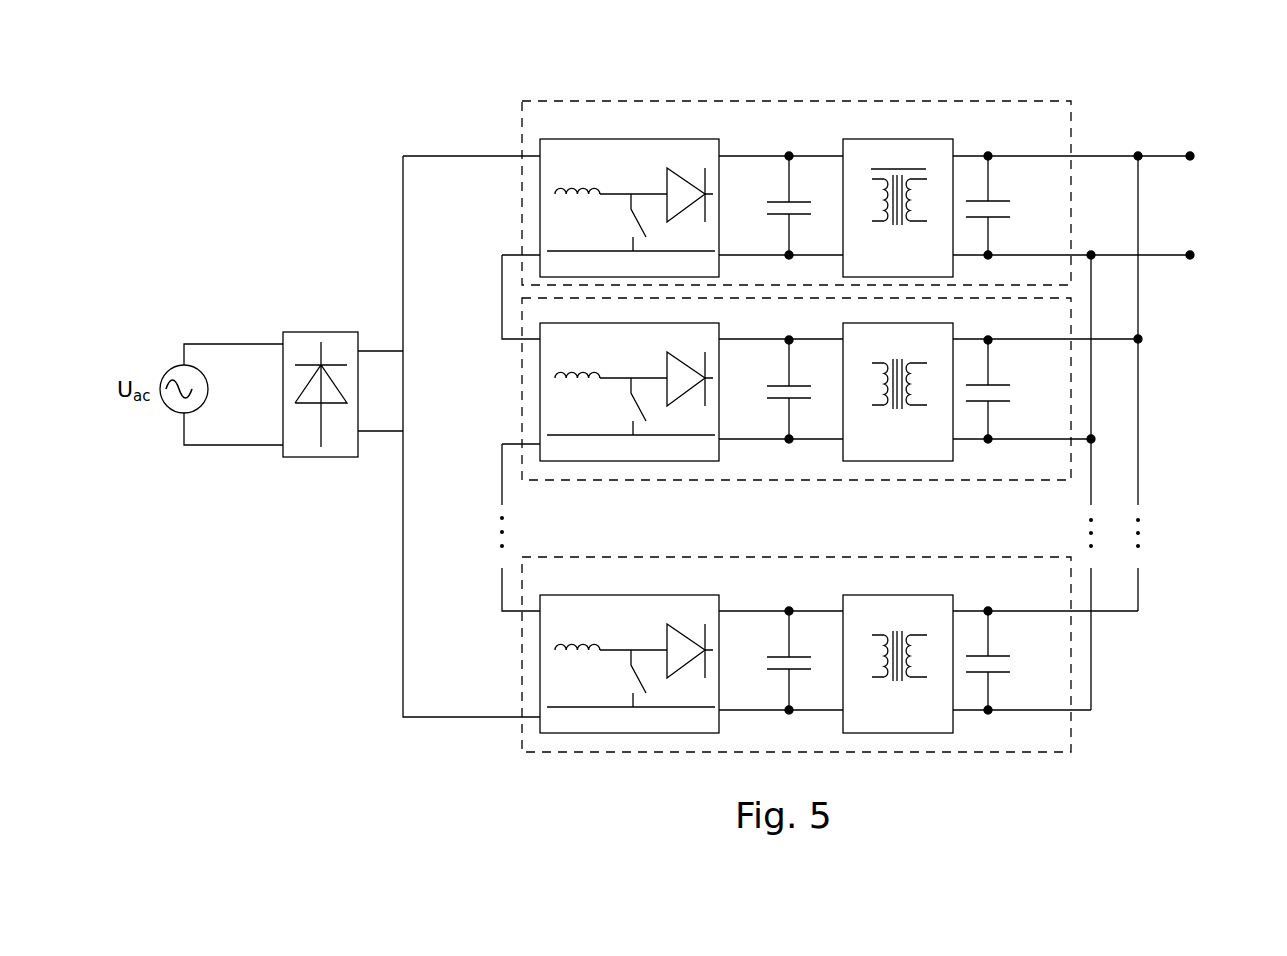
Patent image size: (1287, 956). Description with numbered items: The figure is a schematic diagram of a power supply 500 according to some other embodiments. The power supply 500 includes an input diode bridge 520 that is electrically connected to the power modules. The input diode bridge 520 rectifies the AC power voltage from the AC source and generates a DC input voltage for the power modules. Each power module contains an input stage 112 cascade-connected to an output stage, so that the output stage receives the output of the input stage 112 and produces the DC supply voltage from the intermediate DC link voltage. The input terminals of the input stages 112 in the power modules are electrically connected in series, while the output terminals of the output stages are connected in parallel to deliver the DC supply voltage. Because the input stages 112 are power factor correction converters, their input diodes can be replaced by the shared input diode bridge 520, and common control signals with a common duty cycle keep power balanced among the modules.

The input stage 112 is at (630, 139).
The input diode bridge 520 is at (321, 332).
The power supply 500 is at (889, 395).